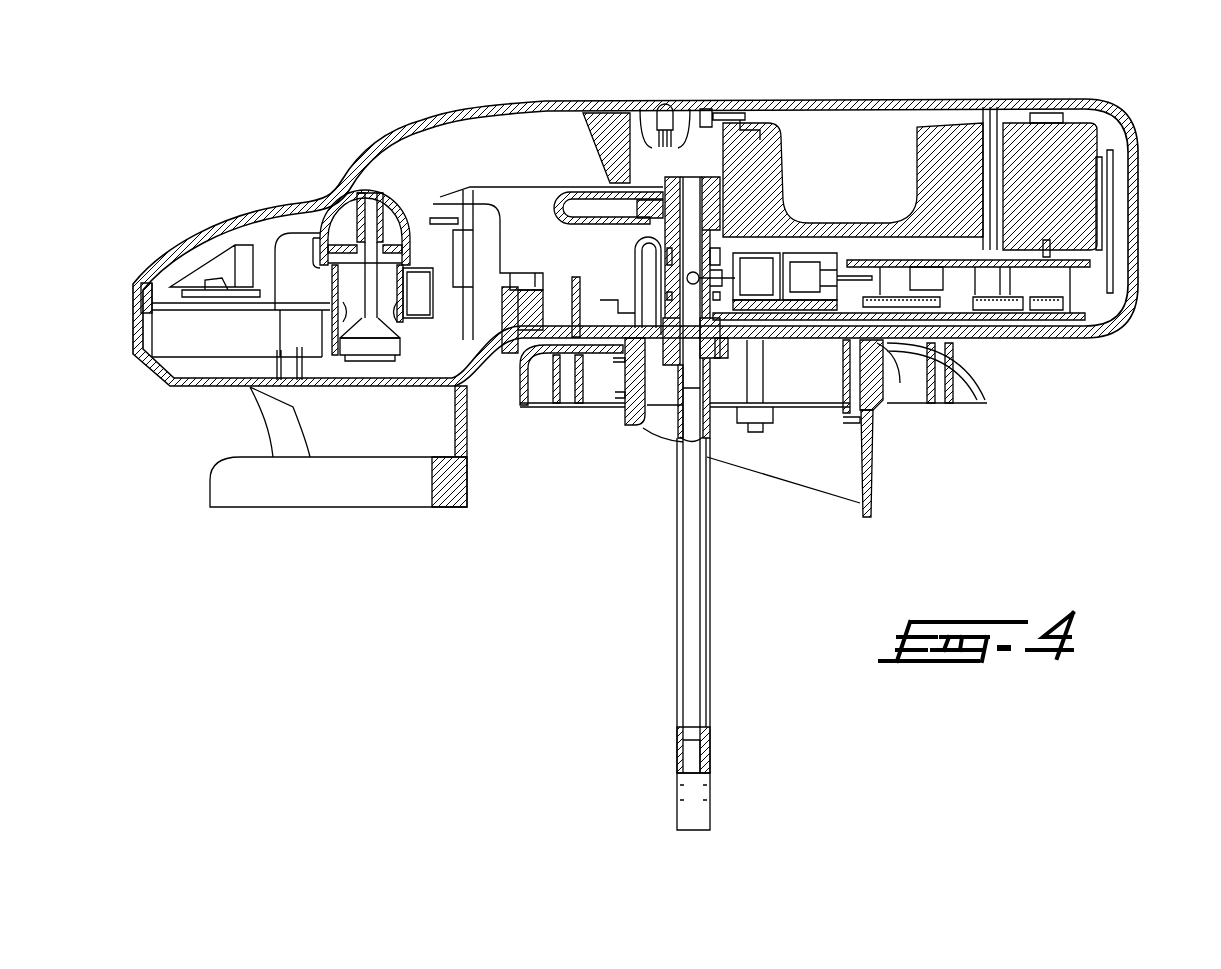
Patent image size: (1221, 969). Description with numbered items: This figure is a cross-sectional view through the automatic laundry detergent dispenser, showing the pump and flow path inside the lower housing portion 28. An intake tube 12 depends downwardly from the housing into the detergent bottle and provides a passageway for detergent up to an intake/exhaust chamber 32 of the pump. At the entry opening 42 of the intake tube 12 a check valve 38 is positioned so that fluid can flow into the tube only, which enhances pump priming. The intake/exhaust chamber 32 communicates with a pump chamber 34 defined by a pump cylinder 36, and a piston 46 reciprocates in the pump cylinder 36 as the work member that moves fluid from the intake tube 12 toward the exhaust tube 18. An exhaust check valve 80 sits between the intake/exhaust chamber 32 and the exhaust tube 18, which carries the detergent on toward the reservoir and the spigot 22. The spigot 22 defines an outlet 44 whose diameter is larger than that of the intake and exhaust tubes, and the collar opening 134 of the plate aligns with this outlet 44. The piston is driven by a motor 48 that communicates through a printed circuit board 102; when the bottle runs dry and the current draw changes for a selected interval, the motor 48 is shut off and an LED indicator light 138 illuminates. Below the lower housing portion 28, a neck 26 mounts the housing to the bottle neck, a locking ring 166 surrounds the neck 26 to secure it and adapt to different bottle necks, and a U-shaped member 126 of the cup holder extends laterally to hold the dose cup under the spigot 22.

The intake tube 12 is at (712, 760).
The exhaust tube 18 is at (573, 213).
The spigot 22 is at (390, 184).
The neck 26 is at (868, 518).
The lower housing portion 28 is at (1058, 337).
The intake/exhaust chamber 32 is at (770, 100).
The pump chamber 34 is at (748, 262).
The pump cylinder 36 is at (770, 268).
The check valve 38 is at (710, 820).
The entry opening 42 is at (683, 765).
The outlet 44 is at (352, 362).
The piston 46 is at (815, 267).
The motor 48 is at (1073, 140).
The exhaust check valve 80 is at (650, 225).
The printed circuit board 102 is at (1112, 165).
The U-shaped member 126 is at (210, 485).
The collar opening 134 is at (393, 360).
The LED indicator light 138 is at (667, 117).
The locking ring 166 is at (988, 397).